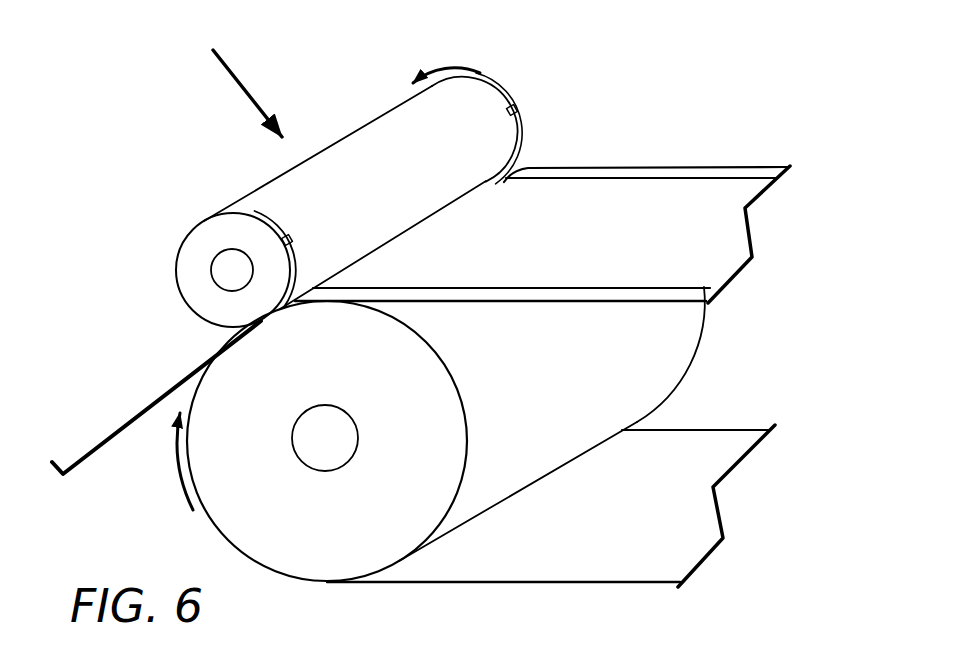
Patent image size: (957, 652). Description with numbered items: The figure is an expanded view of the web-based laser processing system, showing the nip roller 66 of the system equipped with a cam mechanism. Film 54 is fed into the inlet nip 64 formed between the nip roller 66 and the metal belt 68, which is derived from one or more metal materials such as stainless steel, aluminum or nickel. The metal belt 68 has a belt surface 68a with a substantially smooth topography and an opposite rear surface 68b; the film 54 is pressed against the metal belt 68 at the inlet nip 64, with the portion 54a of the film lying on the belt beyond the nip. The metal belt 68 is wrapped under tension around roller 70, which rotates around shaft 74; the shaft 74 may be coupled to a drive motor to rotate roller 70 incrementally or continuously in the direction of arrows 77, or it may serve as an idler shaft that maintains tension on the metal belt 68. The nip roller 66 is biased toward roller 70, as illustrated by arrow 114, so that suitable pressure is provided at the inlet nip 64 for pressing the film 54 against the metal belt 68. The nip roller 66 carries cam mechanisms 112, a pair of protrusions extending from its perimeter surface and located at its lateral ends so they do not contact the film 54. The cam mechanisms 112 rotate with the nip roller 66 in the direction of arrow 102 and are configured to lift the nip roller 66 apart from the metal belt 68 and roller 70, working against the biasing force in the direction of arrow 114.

The film 54 is at (128, 415).
The web portion 54a is at (553, 228).
The inlet nip 64 is at (200, 338).
The nip roller 66 is at (360, 148).
The metal belt 68 is at (653, 307).
The belt surface 68a is at (752, 175).
The rear surface 68b is at (570, 567).
The roller 70 is at (305, 570).
The shaft 74 is at (310, 425).
The arrows 77 is at (170, 466).
The arrow 102 is at (453, 63).
The cam mechanisms 112 is at (287, 225).
The arrow 114 is at (245, 83).